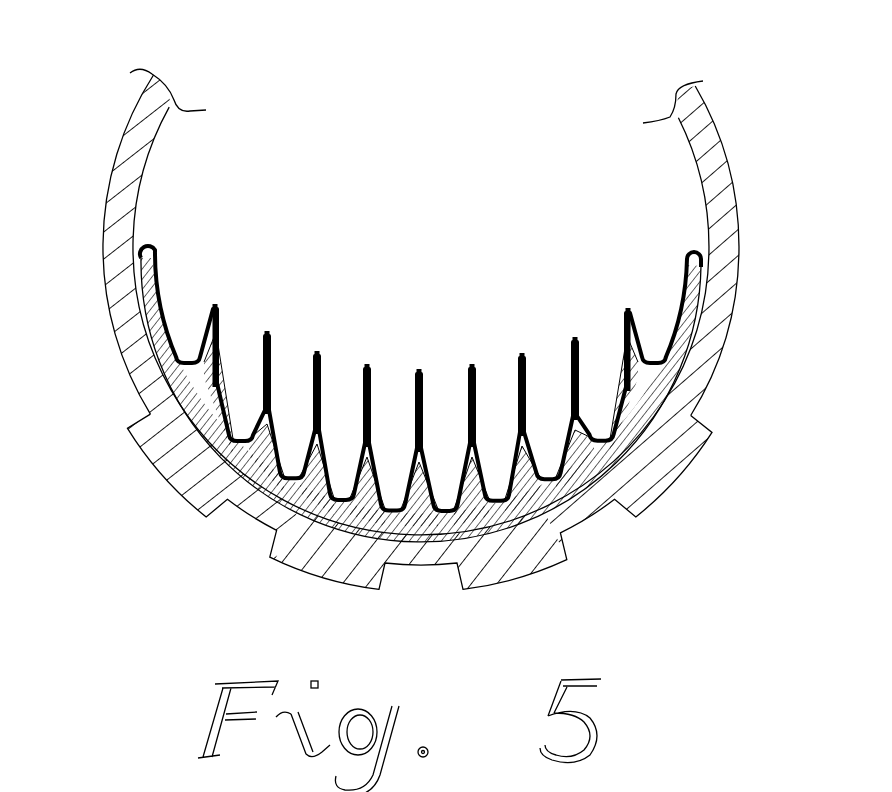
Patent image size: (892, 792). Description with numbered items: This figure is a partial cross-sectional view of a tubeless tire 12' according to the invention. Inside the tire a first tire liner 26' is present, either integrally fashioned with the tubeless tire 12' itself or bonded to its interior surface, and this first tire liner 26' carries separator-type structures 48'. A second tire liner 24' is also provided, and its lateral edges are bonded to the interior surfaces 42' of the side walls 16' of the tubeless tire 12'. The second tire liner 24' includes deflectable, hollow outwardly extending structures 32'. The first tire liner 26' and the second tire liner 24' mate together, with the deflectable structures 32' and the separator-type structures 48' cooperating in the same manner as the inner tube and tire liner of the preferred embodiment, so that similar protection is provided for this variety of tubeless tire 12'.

The tubeless tire 12' is at (469, 242).
The side walls 16' is at (382, 332).
The second tire liner 24' is at (420, 366).
The first tire liner 26' is at (363, 400).
The deflectable, hollow outwardly extending structures 32' is at (421, 345).
The interior surfaces 42' is at (452, 501).
The separator-type structures 48' is at (421, 415).